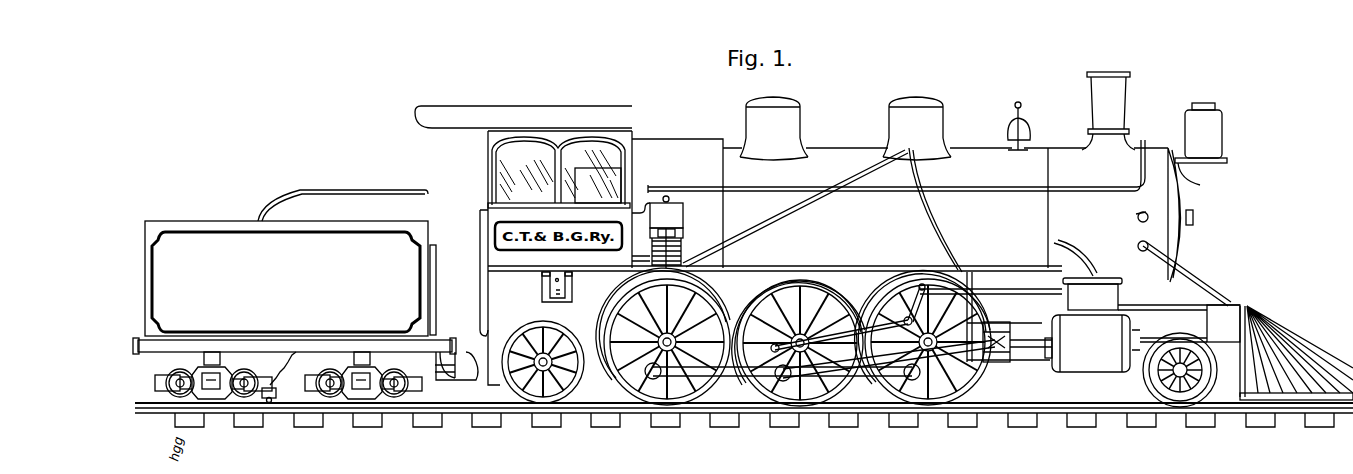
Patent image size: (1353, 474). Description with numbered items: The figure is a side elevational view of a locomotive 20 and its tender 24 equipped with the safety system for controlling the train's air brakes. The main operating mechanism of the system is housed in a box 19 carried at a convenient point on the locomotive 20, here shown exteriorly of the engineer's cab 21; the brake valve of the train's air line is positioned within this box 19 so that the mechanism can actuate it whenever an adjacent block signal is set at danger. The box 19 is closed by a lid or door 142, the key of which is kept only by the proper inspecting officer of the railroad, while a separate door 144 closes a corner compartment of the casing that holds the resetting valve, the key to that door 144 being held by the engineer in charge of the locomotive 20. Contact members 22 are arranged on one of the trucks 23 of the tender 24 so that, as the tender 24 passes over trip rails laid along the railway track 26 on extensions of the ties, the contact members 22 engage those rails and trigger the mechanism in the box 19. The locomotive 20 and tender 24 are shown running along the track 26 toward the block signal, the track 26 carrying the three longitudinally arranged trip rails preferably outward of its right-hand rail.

The box 19 is at (573, 291).
The locomotive 20 is at (931, 189).
The engineer's cab 21 is at (775, 260).
The contact members 22 is at (276, 398).
The trucks 23 is at (256, 386).
The tender 24 is at (305, 285).
The railway track 26 is at (744, 432).
The lid or door 142 is at (548, 290).
The door 144 is at (546, 308).